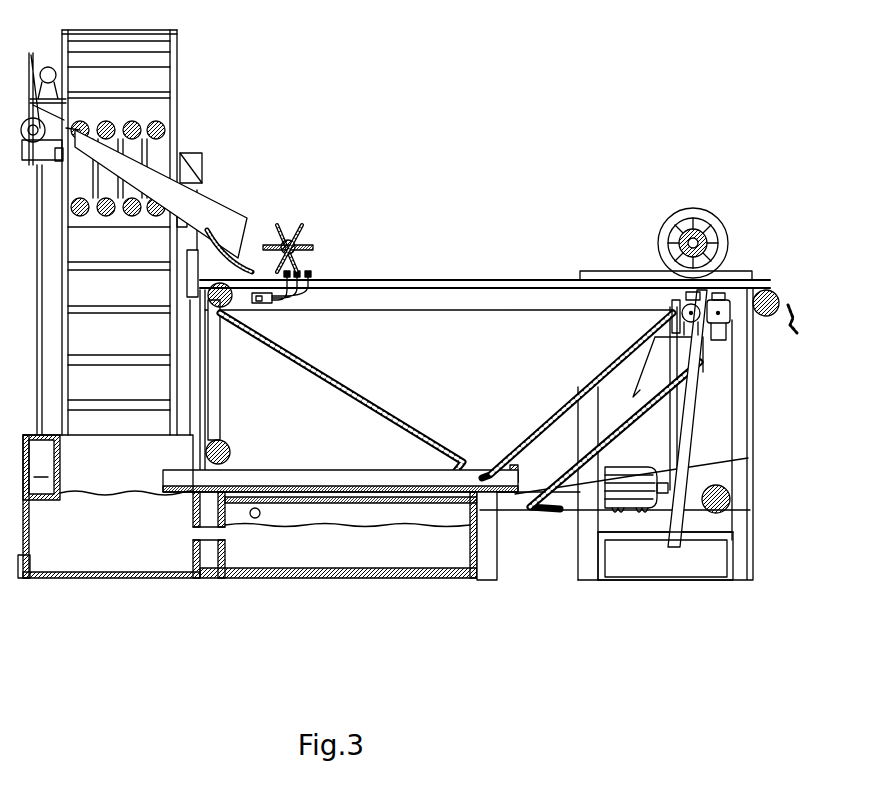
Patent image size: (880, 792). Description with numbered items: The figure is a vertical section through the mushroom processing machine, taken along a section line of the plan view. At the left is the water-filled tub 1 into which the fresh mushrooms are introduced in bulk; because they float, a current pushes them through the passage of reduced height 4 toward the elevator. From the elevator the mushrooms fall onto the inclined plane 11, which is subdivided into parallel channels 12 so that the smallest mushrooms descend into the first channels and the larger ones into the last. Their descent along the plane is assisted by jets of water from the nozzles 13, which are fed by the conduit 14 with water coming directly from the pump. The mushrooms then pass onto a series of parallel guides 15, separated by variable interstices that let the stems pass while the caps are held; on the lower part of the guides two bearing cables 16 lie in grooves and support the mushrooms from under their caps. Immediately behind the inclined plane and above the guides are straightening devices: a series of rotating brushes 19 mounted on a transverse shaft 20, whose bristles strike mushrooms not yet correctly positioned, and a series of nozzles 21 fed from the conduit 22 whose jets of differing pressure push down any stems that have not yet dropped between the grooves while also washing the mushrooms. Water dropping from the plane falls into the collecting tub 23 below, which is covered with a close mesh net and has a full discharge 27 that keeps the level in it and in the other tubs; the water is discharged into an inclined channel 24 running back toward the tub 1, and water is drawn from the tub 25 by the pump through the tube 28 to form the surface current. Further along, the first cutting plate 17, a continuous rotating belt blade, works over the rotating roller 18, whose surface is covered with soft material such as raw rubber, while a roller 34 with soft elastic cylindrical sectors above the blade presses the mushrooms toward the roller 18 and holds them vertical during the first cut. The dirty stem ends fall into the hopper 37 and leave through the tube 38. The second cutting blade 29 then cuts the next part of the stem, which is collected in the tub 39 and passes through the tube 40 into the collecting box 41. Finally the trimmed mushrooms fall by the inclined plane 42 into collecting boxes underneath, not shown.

The tub 1 is at (97, 523).
The passage of reduced height 4 is at (41, 467).
The inclined plane 11 is at (188, 176).
The parallel channels 12 is at (217, 205).
The nozzles 13 is at (78, 145).
The conduit 14 is at (60, 140).
The parallel guides 15 is at (413, 283).
The bearing cables 16 is at (452, 290).
The first cutting plate 17 is at (698, 291).
The rotating roller 18 is at (718, 313).
The rotating brushes 19 is at (277, 225).
The distributor hub 20 is at (297, 236).
The nozzles 21 is at (310, 272).
The conduit 22 is at (260, 297).
The collecting tub 23 is at (492, 343).
The inclined channel 24 is at (369, 478).
The tub 25 is at (320, 548).
The full discharge 27 is at (255, 518).
The tube 28 is at (208, 533).
The second cutting blade 29 is at (713, 303).
The roller 34 is at (703, 215).
The hopper 37 is at (657, 380).
The tube 38 is at (590, 457).
The tub 39 is at (690, 317).
The tube 40 is at (695, 445).
The collecting box 41 is at (695, 562).
The inclined plane 42 is at (793, 303).